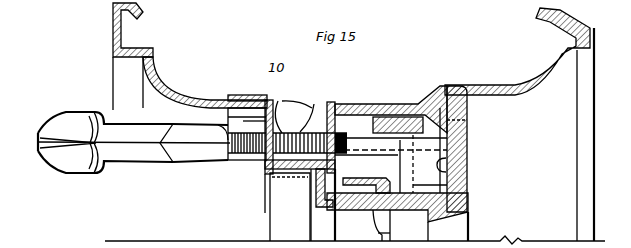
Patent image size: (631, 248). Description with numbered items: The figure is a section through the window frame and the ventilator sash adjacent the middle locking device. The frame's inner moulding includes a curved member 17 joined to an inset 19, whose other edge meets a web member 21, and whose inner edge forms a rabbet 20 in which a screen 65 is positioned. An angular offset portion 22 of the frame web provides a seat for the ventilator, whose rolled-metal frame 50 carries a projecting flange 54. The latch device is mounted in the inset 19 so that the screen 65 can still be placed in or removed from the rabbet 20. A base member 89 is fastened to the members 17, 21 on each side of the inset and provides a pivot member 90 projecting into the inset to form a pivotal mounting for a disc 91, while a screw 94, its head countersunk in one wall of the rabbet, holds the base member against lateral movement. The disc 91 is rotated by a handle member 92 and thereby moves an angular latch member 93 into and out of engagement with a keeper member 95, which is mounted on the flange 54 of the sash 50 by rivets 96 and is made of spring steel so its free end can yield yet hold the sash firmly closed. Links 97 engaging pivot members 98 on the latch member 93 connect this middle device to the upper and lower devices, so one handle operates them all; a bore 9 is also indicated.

The bore 9 is at (370, 162).
The curved member 17 is at (212, 104).
The inset 19 is at (297, 107).
The rabbet 20 is at (268, 183).
The web member 21 is at (387, 108).
The angular offset portion 22 is at (517, 124).
The ventilator frame 50 is at (397, 209).
The projecting flange 54 is at (473, 151).
The screen 65 is at (265, 208).
The base member 89 is at (310, 150).
The pivot member 90 is at (336, 101).
The disc 91 is at (228, 153).
The handle member 92 is at (140, 160).
The angular latch member 93 is at (400, 160).
The screw 94 is at (305, 176).
The keeper member 95 is at (470, 188).
The rivet 96 is at (470, 169).
The link 97 is at (410, 106).
The pivot member 98 is at (472, 125).